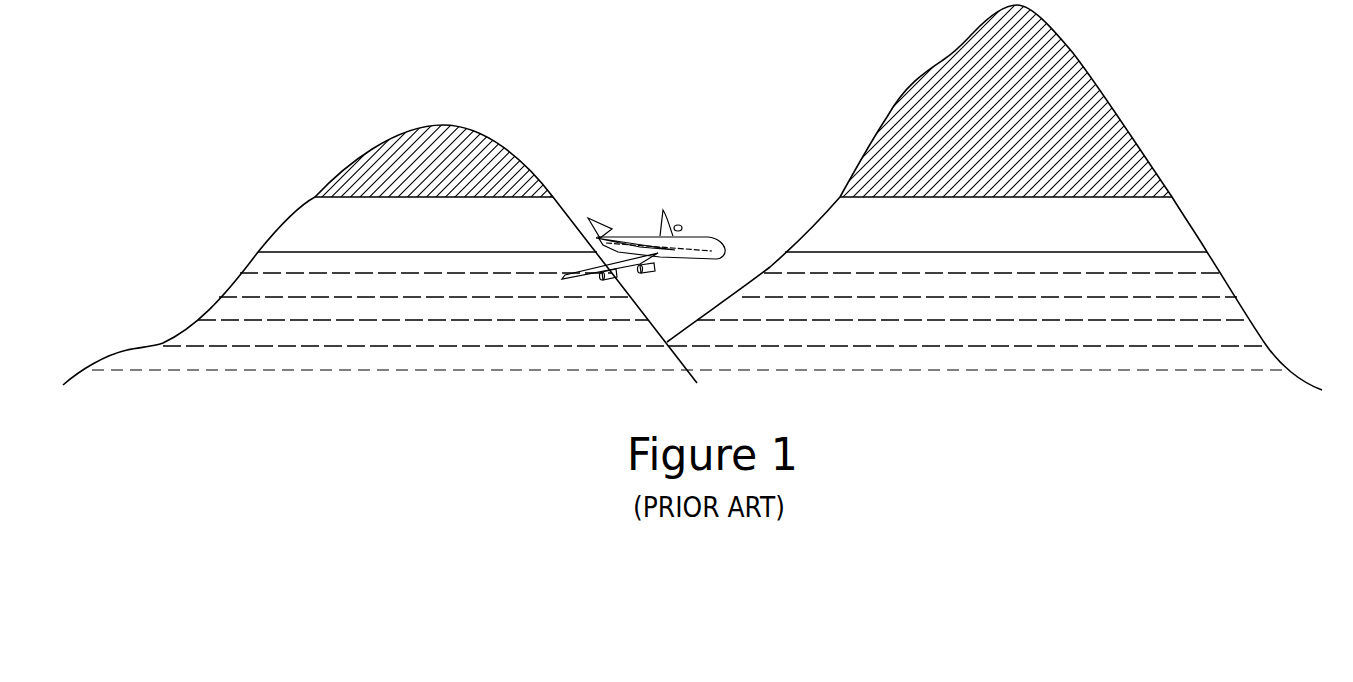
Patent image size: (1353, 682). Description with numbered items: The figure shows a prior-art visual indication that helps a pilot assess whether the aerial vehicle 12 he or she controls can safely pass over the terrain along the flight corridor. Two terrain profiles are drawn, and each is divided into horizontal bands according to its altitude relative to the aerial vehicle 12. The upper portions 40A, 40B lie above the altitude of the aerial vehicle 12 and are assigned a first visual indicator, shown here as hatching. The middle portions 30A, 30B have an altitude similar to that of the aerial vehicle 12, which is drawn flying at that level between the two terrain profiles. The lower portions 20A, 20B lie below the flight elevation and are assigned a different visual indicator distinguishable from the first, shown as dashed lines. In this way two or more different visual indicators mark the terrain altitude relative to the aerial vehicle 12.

The aerial vehicle 12 is at (676, 218).
The terrain portion above aerial vehicle altitude 40A is at (459, 185).
The terrain portion at similar altitude 30A is at (459, 239).
The terrain portion below flight elevation 20A is at (690, 321).
The terrain portion above aerial vehicle altitude 40B is at (1028, 118).
The terrain portion at similar altitude 30B is at (1028, 241).
The terrain portion below flight elevation 20B is at (1028, 322).